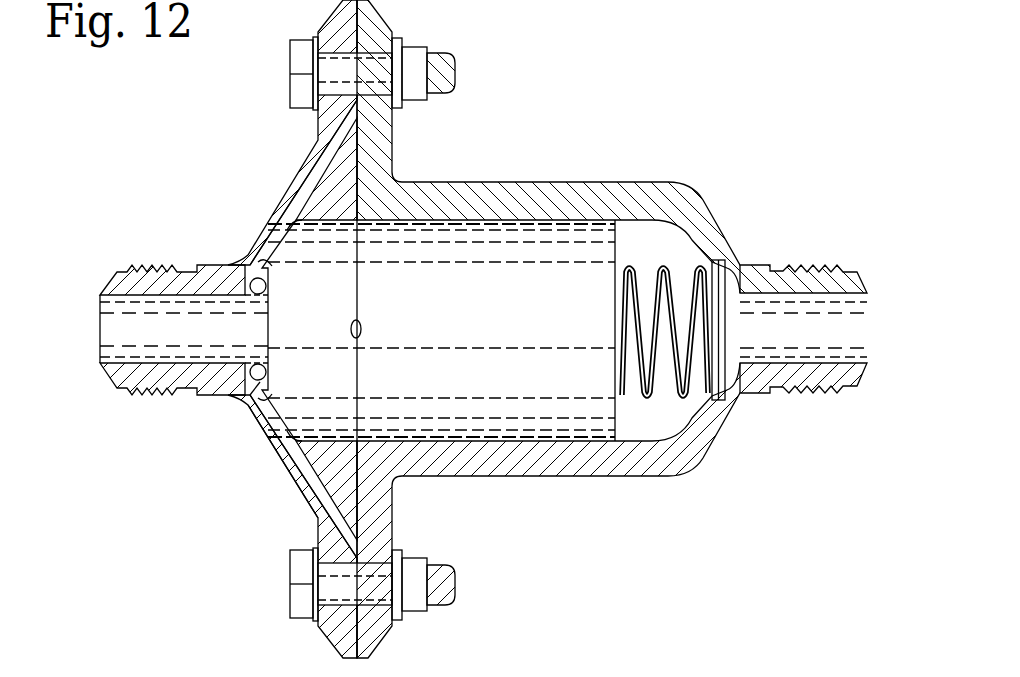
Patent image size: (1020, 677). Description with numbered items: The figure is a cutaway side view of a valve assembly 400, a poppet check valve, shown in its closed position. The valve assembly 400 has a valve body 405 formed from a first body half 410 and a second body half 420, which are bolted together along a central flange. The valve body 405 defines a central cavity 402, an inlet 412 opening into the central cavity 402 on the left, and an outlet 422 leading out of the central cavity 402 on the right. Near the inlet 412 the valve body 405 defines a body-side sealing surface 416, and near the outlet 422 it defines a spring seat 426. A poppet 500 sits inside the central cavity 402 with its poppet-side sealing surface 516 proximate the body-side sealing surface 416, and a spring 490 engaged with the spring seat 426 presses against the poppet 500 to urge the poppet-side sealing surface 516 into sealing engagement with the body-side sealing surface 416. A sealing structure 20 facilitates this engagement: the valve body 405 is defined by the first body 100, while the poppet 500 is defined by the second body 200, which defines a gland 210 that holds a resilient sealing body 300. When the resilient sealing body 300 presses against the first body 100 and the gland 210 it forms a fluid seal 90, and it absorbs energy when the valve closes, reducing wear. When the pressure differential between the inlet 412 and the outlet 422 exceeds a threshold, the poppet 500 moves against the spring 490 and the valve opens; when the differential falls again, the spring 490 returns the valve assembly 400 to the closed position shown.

The valve assembly 400 is at (154, 102).
The first body 100 is at (300, 168).
The valve body 405 is at (537, 180).
The second body half 420 is at (730, 218).
The outlet 422 is at (842, 320).
The first body half 410 is at (244, 230).
The inlet 412 is at (122, 342).
The second body 200 is at (438, 216).
The poppet 500 is at (302, 250).
The central cavity 402 is at (308, 228).
The body-side sealing surface 416 is at (272, 265).
The resilient sealing body 300 is at (266, 286).
The gland 210 is at (258, 300).
The fluid seal 90 is at (248, 380).
The sealing structure 20 is at (223, 424).
The poppet-side sealing surface 516 is at (258, 437).
The spring 490 is at (668, 438).
The spring seat 426 is at (712, 266).